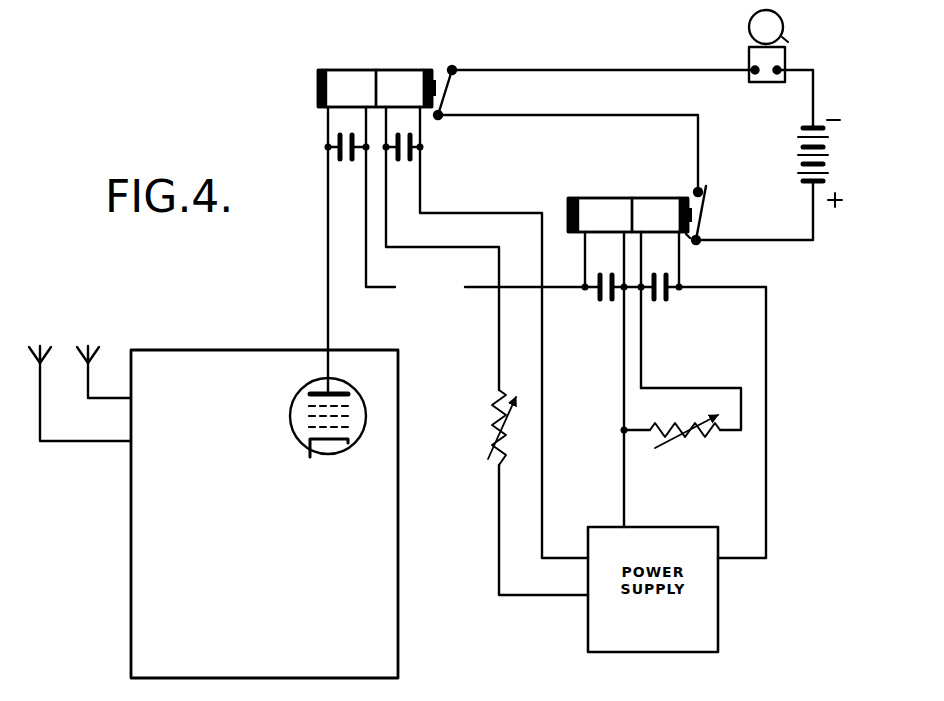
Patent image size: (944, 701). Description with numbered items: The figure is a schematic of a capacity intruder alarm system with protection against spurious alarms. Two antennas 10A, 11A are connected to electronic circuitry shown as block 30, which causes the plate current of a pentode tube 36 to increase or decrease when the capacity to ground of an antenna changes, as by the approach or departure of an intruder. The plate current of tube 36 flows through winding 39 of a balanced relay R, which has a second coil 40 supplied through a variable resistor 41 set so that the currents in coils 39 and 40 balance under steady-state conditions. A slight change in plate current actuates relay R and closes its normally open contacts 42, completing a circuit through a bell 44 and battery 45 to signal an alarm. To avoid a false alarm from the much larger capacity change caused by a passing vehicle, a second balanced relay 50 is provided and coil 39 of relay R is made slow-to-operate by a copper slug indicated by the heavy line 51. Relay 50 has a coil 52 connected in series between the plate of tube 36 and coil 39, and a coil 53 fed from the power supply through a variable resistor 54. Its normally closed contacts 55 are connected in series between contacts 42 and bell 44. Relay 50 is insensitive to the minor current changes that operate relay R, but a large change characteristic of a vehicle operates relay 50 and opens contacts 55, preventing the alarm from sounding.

The antenna 10A is at (94, 334).
The antenna 11A is at (42, 334).
The electronic circuitry block 30 is at (232, 357).
The pentode tube 36 is at (298, 422).
The winding of balanced relay R 39 is at (588, 204).
The second coil of relay R 40 is at (662, 204).
The variable resistor 41 is at (693, 440).
The normally open contacts 42 is at (702, 190).
The bell 44 is at (748, 32).
The battery 45 is at (824, 162).
The second balanced relay 50 is at (377, 58).
The copper slug 51 is at (608, 199).
The coil of relay 50 52 is at (338, 78).
The coil of relay 50 53 is at (416, 78).
The variable resistor 54 is at (497, 412).
The normally closed contacts 55 is at (440, 74).
The balanced relay R is at (688, 238).